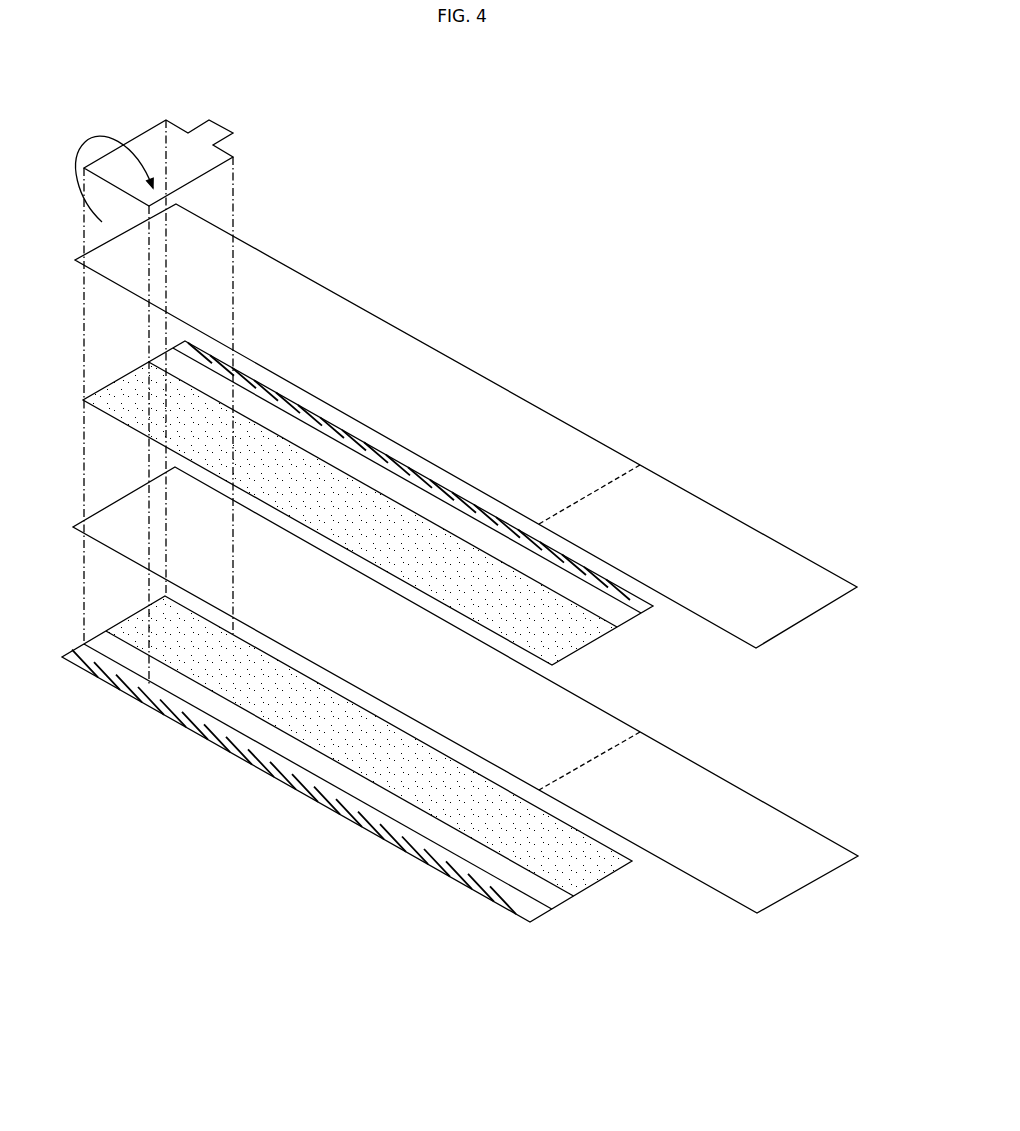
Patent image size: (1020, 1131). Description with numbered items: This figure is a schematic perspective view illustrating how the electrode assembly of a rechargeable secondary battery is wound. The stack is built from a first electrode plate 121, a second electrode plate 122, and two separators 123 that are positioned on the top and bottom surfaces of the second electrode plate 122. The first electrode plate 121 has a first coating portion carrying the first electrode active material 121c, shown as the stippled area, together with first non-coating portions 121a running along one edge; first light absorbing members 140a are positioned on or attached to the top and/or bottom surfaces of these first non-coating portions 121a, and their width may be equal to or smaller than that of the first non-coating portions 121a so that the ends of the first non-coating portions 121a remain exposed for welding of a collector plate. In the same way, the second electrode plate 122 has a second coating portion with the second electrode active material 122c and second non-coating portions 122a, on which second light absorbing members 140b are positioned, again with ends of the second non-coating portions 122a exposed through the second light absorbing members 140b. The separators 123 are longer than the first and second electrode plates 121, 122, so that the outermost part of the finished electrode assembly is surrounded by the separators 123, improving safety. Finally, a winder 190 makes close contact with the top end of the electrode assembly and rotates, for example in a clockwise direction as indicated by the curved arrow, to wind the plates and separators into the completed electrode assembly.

The winder 190 is at (214, 130).
The separator 123 is at (708, 782).
The second electrode plate 122 is at (613, 637).
The second non-coating portion 122a is at (400, 485).
The second electrode active material 122c is at (328, 462).
The second light absorbing member 140b is at (478, 505).
The first electrode plate 121 is at (590, 898).
The first non-coating portion 121a is at (547, 912).
The first electrode active material 121c is at (462, 848).
The first light absorbing member 140a is at (508, 913).